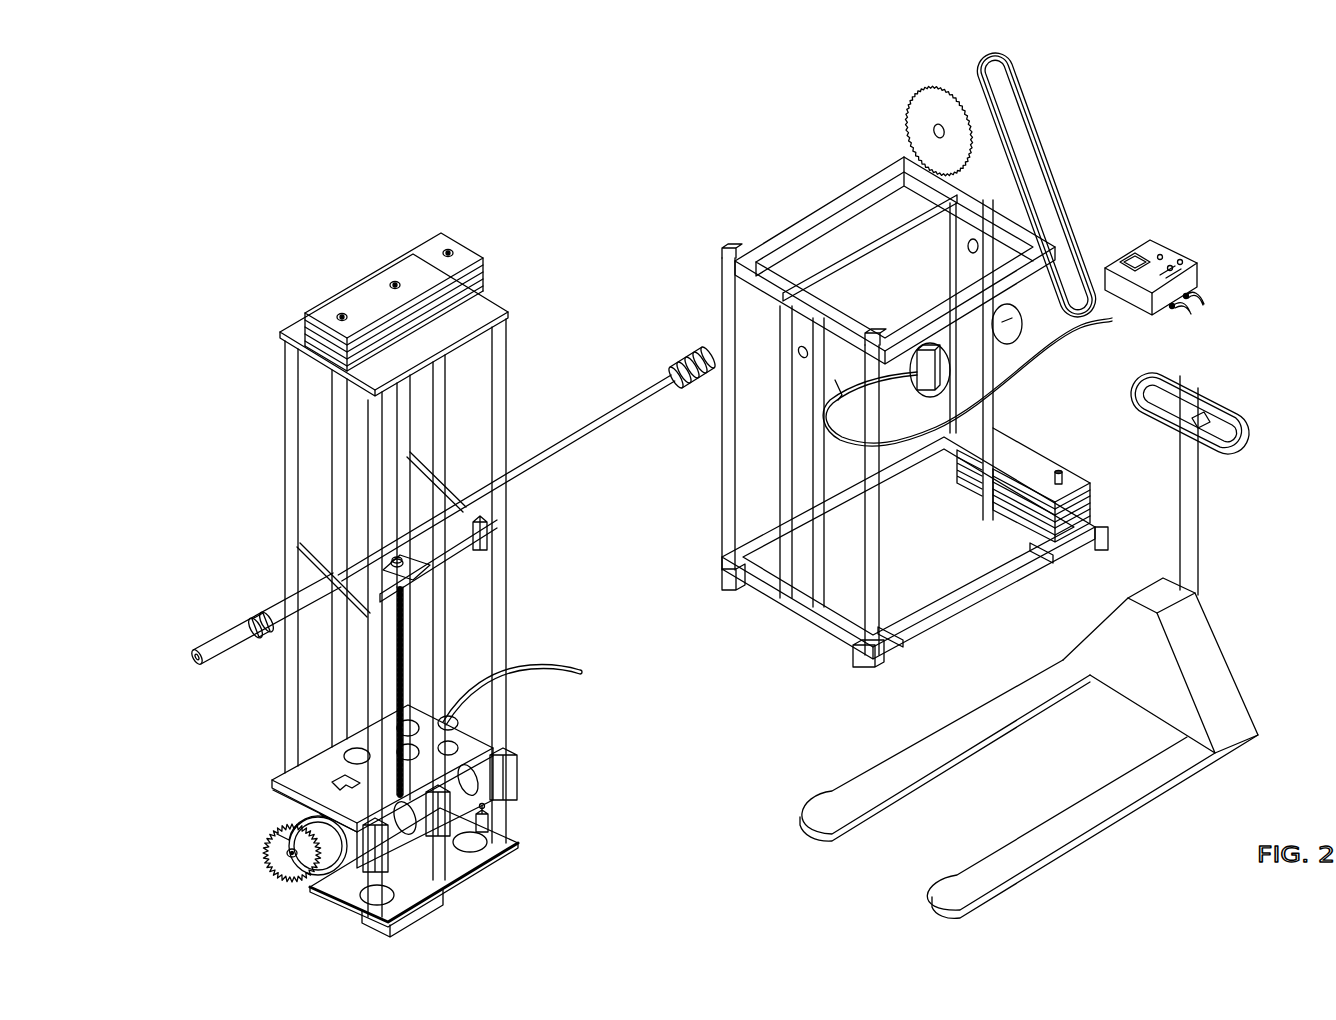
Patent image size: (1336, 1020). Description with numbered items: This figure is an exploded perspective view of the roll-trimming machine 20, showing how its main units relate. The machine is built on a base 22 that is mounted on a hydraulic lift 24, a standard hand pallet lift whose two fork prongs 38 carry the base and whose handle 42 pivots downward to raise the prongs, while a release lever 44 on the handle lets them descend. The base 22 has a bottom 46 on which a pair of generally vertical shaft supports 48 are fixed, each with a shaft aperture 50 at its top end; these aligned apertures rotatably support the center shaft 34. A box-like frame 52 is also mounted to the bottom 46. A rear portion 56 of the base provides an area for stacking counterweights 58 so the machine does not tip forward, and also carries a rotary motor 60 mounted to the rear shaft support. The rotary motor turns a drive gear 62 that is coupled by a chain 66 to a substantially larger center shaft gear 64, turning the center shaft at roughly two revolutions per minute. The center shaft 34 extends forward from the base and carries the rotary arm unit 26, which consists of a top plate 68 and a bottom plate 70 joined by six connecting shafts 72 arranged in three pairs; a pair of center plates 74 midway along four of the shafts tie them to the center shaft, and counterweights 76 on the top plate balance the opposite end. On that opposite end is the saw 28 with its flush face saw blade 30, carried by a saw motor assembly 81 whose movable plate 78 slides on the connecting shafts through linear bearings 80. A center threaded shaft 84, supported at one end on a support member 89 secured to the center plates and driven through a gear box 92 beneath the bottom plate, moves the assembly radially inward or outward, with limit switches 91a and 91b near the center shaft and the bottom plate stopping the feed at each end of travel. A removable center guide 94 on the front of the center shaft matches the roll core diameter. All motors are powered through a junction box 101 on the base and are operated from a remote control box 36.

The roll-trimming machine 20 is at (556, 148).
The base 22 is at (765, 163).
The hydraulic lift 24 is at (1212, 512).
The rotary arm unit 26 is at (328, 270).
The saw 28 is at (300, 806).
The flush face saw blade 30 is at (268, 853).
The center shaft 34 is at (625, 420).
The control box 36 is at (1163, 243).
The fork prongs 38 is at (863, 780).
The handle 42 is at (1168, 375).
The release lever 44 is at (1197, 416).
The bottom 46 is at (962, 608).
The shaft supports 48 is at (800, 592).
The shaft aperture 50 is at (800, 356).
The frame 52 is at (762, 238).
The rear portion 56 is at (1085, 449).
The counterweights 58 is at (1083, 490).
The rotary motor 60 is at (945, 384).
The drive gear 62 is at (1020, 328).
The center shaft gear 64 is at (912, 113).
The chain 66 is at (1065, 208).
The top plate 68 is at (490, 305).
The bottom plate 70 is at (513, 837).
The connecting shafts 72 is at (438, 403).
The center plates 74 is at (463, 480).
The counterweights 76 is at (418, 258).
The movable plate 78 is at (285, 780).
The linear bearings 80 is at (515, 762).
The saw motor assembly 81 is at (205, 816).
The threaded shaft 84 is at (397, 663).
The support member 89 is at (460, 537).
The limit switch 91a is at (485, 532).
The limit switch 91b is at (500, 816).
The gear box 92 is at (440, 905).
The center guide 94 is at (215, 645).
The junction box 101 is at (838, 392).